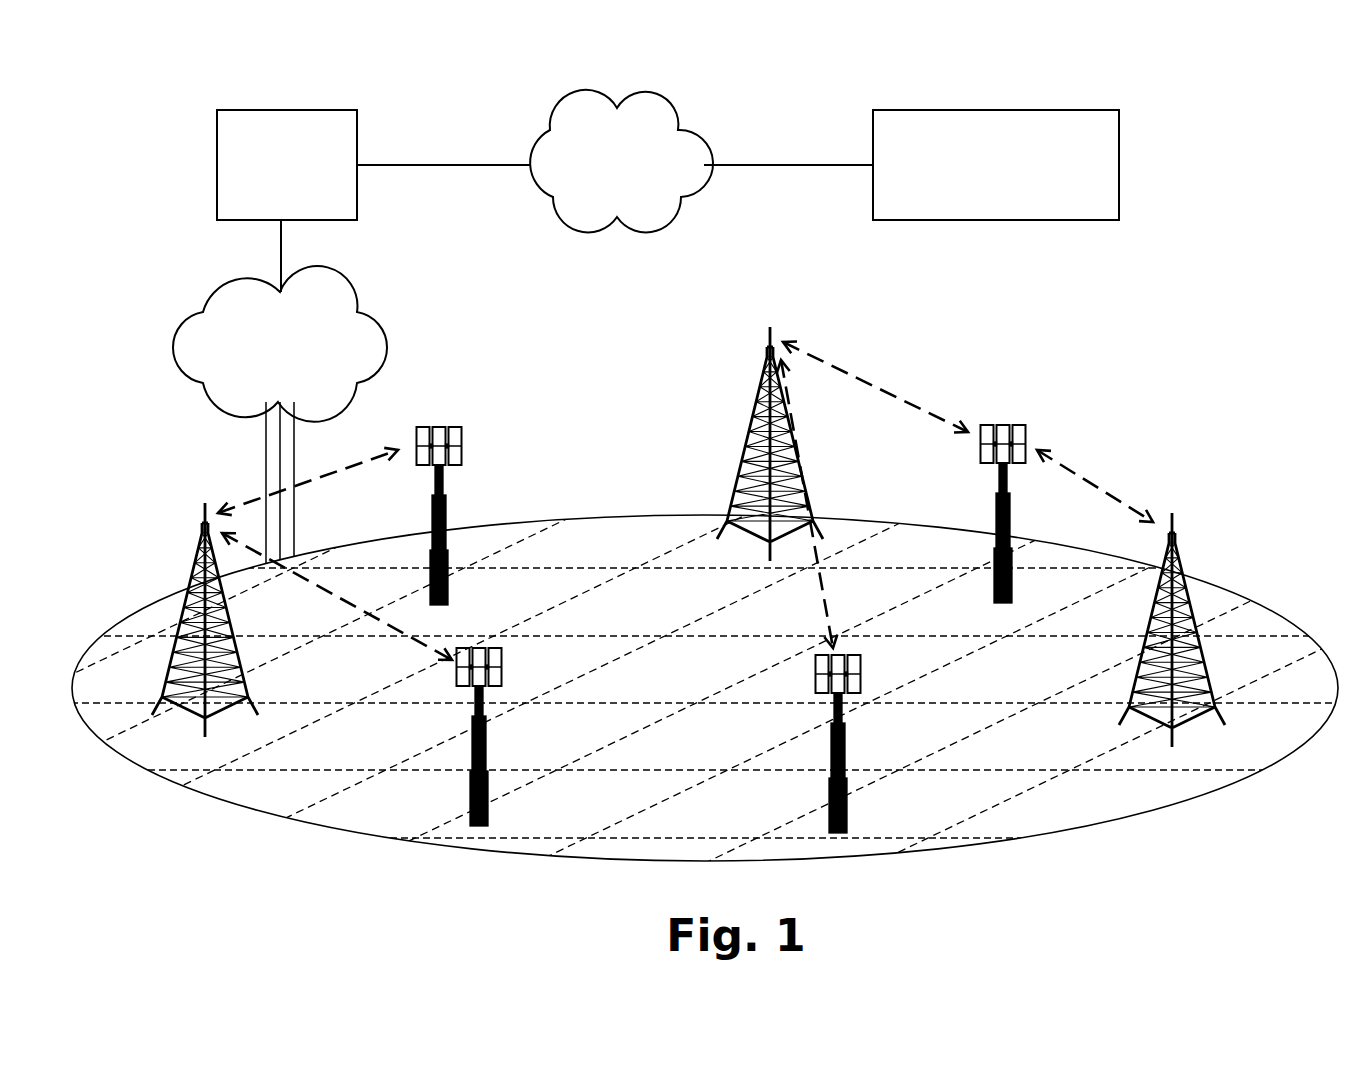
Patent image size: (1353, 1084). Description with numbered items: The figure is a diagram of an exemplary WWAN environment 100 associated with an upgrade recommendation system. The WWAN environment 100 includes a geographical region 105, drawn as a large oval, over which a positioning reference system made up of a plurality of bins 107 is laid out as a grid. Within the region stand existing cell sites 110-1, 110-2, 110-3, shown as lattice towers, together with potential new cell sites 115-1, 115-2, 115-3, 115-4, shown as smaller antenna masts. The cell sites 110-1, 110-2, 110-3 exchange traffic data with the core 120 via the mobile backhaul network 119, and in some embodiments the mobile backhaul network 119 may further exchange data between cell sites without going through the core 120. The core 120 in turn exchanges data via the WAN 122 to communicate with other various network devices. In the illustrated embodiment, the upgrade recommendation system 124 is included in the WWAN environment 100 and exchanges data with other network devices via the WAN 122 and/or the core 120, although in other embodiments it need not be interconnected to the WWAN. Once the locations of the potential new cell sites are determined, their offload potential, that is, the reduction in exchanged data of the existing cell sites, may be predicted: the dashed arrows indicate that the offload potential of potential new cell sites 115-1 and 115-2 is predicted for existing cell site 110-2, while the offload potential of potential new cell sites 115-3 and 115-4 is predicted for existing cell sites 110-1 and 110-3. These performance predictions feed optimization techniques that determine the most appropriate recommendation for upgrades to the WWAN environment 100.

The WWAN environment 100 is at (157, 100).
The geographical region 105 is at (272, 818).
The bins 107 is at (563, 807).
The cell site 110-1 is at (740, 455).
The cell site 110-2 is at (250, 692).
The cell site 110-3 is at (1212, 662).
The potential new cell site 115-1 is at (450, 503).
The potential new cell site 115-2 is at (490, 755).
The potential new cell site 115-3 is at (850, 745).
The potential new cell site 115-4 is at (990, 505).
The mobile backhaul network 119 is at (373, 313).
The core 120 is at (360, 130).
The WAN 122 is at (615, 107).
The upgrade recommendation system 124 is at (1119, 165).